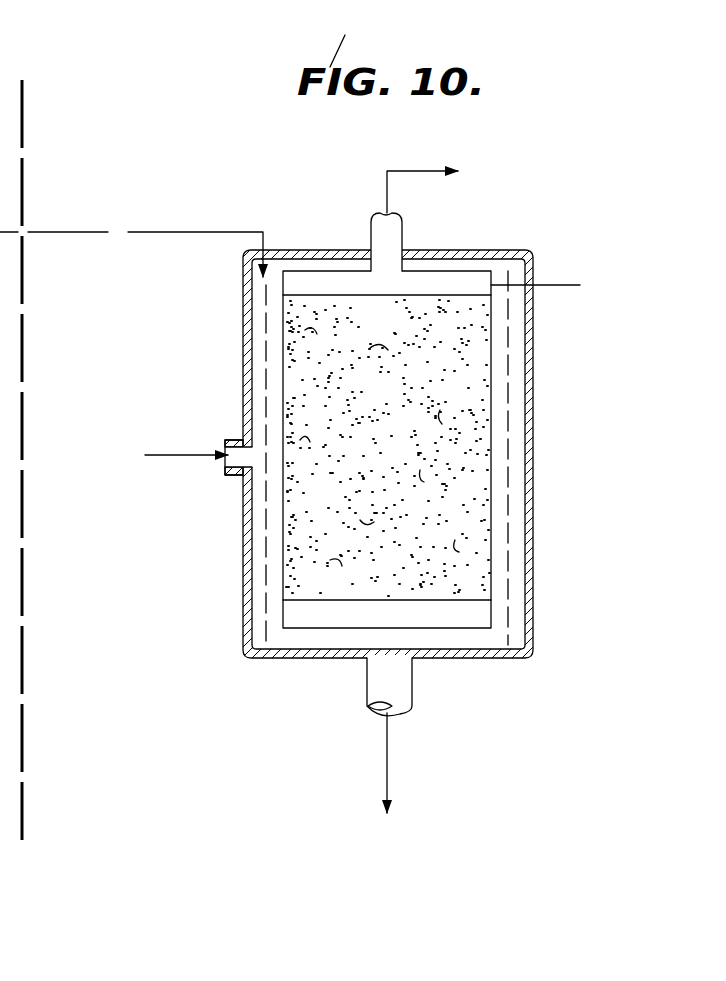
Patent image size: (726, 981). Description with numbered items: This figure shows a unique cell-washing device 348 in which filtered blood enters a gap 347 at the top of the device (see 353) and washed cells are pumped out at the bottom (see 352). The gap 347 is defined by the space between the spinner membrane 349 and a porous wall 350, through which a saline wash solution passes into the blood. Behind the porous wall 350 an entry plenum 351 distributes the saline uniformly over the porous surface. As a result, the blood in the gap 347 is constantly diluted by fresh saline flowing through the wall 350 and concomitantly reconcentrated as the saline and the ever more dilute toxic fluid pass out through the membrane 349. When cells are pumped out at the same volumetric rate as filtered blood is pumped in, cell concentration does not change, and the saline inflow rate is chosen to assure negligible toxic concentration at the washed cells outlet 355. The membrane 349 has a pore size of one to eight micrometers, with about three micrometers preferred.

The gap 347 is at (275, 325).
The device 348 is at (237, 583).
The spinner membrane 349 is at (480, 552).
The porous wall 350 is at (267, 368).
The entry plenum 351 is at (257, 407).
The washed cells outlet 352 is at (387, 732).
The filtered blood inlet 353 is at (266, 238).
The washed cells outlet 355 is at (413, 171).